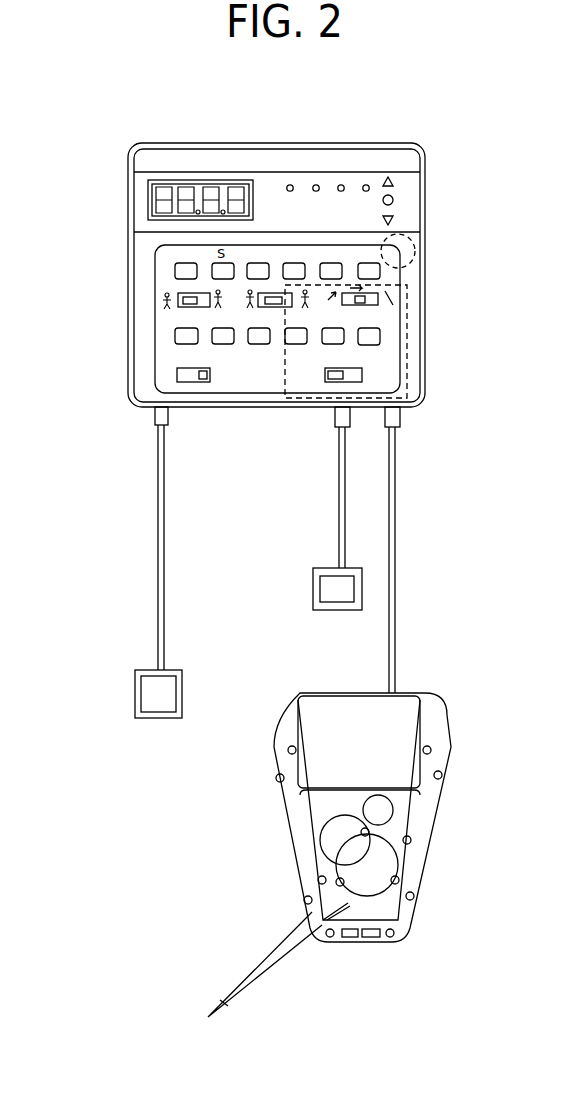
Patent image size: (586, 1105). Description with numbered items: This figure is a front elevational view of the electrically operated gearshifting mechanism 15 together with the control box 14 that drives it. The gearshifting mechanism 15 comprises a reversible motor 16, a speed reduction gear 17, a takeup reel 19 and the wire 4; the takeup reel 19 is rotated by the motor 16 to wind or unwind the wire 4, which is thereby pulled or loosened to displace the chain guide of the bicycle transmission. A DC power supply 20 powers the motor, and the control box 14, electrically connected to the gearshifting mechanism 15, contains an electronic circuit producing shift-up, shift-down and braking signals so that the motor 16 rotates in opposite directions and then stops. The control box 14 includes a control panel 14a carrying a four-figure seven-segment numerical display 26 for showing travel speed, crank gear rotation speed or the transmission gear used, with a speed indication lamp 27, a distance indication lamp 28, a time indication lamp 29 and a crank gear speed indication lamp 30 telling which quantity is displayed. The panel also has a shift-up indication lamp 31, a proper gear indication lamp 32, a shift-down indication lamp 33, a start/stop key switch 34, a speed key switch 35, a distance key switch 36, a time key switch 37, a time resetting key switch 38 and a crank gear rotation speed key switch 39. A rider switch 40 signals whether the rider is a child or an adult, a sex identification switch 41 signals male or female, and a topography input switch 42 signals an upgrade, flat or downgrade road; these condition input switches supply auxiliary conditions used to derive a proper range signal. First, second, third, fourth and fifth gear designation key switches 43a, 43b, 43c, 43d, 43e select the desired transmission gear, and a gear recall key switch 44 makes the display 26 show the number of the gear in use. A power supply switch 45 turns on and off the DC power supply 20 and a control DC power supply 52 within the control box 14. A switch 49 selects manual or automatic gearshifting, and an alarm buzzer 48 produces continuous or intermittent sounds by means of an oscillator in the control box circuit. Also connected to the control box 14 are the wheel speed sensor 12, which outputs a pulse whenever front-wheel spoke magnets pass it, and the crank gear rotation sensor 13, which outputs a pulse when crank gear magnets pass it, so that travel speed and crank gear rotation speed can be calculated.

The wire 4 is at (223, 1005).
The wheel speed sensor 12 is at (166, 691).
The crank gear rotation sensor 13 is at (332, 592).
The control box 14 is at (436, 143).
The control panel 14a is at (366, 184).
The electrically operated gearshifting mechanism 15 is at (463, 758).
The reversible motor 16 is at (383, 808).
The speed reduction gear 17 is at (322, 838).
The takeup reel 19 is at (380, 887).
The DC power supply 20 is at (410, 712).
The four-figure seven-segment numerical display 26 is at (204, 190).
The speed indication lamp 27 is at (289, 184).
The distance indication lamp 28 is at (315, 184).
The time indication lamp 29 is at (341, 184).
The crank gear speed indication lamp 30 is at (378, 183).
The shift-up indication lamp 31 is at (397, 183).
The proper gear indication lamp 32 is at (395, 201).
The shift-down indication lamp 33 is at (398, 218).
The start/stop key switch 34 is at (180, 270).
The speed key switch 35 is at (163, 258).
The distance key switch 36 is at (255, 264).
The time key switch 37 is at (290, 265).
The time resetting key switch 38 is at (320, 268).
The crank gear rotation speed key switch 39 is at (375, 277).
The rider switch 40 is at (182, 300).
The sex identification switch 41 is at (302, 308).
The topography input switch 42 is at (375, 298).
The first gear designation key switch 43a is at (178, 344).
The second gear designation key switch 43b is at (222, 345).
The third gear designation key switch 43c is at (258, 345).
The fourth gear designation key switch 43d is at (295, 345).
The fifth gear designation key switch 43e is at (330, 345).
The gear recall key switch 44 is at (375, 338).
The power supply switch 45 is at (352, 380).
The alarm buzzer 48 is at (415, 251).
The switch for selecting manual or automatic gearshifting operation 49 is at (192, 378).
The control DC power supply 52 is at (420, 378).